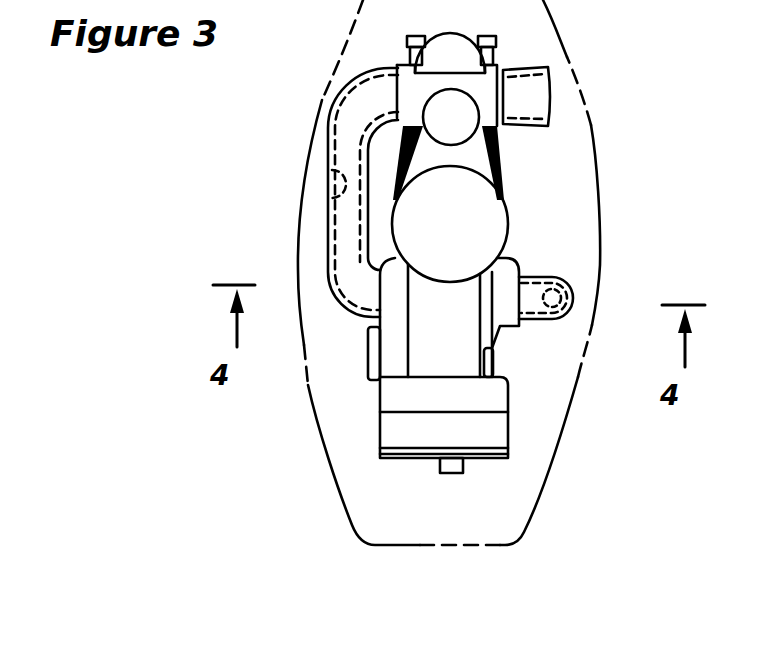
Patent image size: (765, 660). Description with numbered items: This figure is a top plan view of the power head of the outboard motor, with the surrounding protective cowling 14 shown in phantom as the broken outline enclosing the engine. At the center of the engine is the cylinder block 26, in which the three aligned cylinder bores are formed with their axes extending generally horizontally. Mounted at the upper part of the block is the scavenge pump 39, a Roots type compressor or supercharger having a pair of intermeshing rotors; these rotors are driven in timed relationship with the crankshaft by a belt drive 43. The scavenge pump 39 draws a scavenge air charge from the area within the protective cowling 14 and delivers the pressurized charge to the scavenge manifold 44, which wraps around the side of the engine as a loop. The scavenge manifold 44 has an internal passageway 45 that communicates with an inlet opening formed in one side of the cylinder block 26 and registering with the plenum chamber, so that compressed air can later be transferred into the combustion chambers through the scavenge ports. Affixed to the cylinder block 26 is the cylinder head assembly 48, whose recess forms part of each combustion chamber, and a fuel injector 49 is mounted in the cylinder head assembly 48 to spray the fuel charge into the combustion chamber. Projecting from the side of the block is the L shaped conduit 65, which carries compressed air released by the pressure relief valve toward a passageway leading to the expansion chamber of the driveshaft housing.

The protective cowling 14 is at (548, 472).
The cylinder block 26 is at (487, 392).
The scavenge pump 39 is at (512, 136).
The belt drive 43 is at (500, 175).
The scavenge manifold 44 is at (333, 113).
The internal passageway 45 is at (333, 203).
The cylinder head assembly 48 is at (498, 425).
The fuel injector 49 is at (463, 465).
The L shaped conduit 65 is at (550, 277).